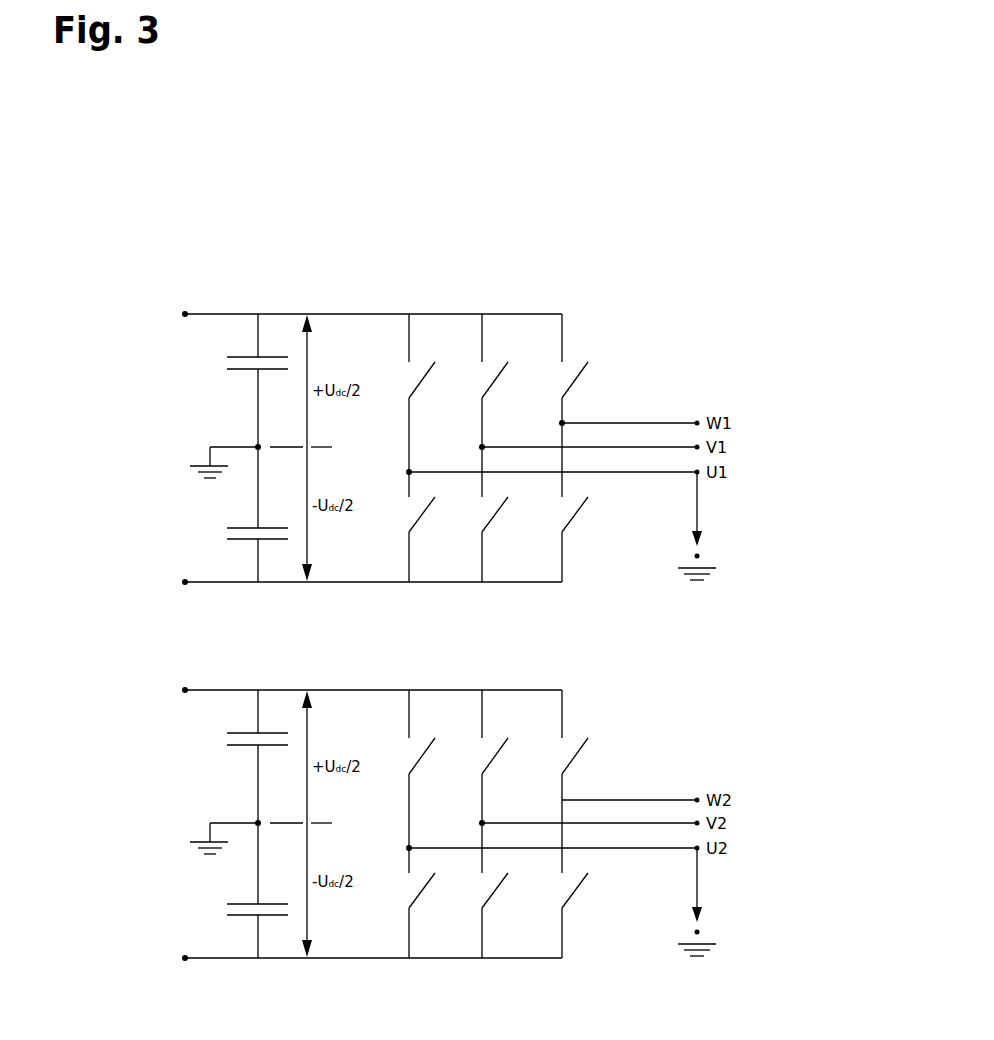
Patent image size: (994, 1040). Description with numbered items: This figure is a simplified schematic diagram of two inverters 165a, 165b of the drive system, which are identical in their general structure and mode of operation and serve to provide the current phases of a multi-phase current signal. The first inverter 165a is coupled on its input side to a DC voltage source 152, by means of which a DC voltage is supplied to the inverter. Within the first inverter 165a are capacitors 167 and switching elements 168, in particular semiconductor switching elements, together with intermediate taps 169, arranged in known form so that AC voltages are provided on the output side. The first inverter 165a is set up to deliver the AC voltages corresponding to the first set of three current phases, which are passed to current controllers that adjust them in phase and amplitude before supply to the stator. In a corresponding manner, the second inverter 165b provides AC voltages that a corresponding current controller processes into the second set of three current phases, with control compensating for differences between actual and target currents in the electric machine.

The DC voltage source 152 is at (185, 317).
The capacitors 167 is at (247, 357).
The switching elements 168 is at (409, 396).
The intermediate taps 169 is at (562, 423).
The first inverter 165a is at (480, 357).
The second inverter 165b is at (544, 781).